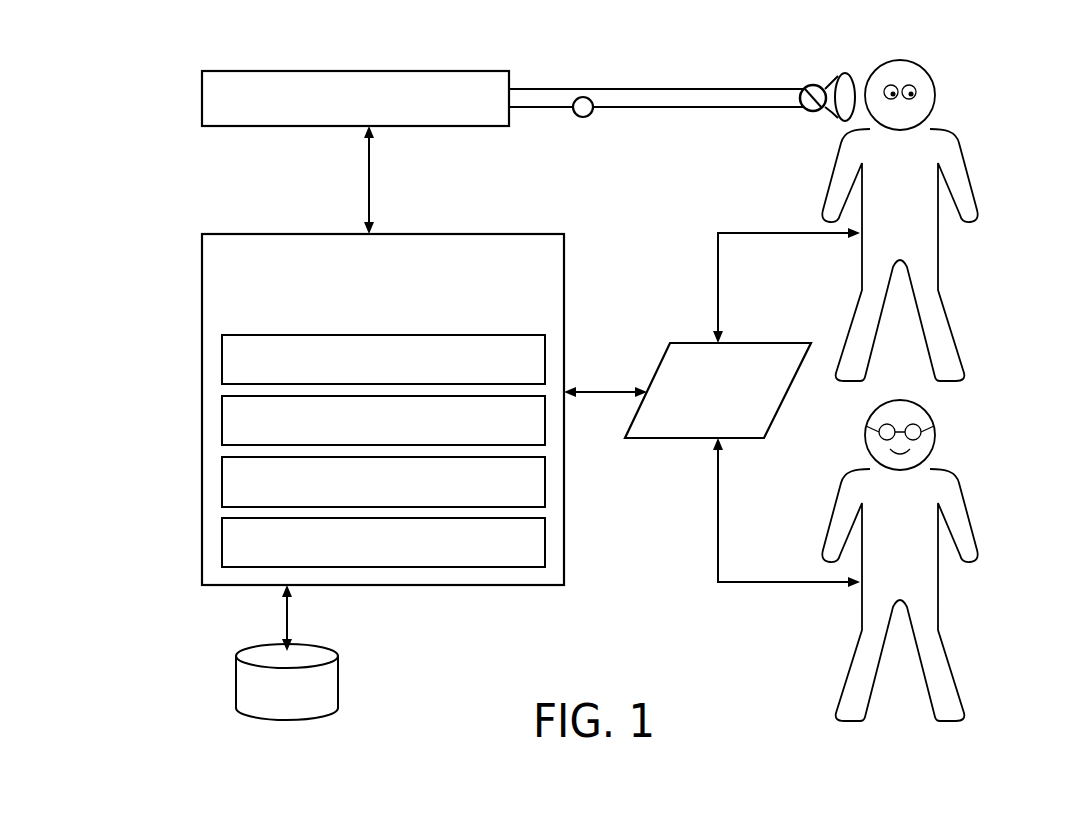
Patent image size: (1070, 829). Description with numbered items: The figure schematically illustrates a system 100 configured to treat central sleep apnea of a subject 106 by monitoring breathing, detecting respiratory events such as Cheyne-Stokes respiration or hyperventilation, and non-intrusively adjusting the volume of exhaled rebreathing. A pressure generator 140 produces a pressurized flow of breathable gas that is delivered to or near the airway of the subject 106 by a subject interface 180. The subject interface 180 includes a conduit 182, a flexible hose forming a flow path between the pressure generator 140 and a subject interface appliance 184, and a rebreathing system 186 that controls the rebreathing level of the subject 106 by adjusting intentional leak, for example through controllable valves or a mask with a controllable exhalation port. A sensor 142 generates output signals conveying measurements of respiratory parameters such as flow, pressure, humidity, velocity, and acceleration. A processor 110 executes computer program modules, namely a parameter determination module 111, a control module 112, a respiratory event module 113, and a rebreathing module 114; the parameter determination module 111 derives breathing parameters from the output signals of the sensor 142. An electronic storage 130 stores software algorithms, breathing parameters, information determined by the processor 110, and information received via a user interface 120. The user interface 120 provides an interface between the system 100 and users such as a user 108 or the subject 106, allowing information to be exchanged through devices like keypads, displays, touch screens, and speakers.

The system 100 is at (128, 634).
The subject 106 is at (948, 140).
The user 108 is at (948, 480).
The processor 110 is at (252, 271).
The parameter determination module 111 is at (403, 556).
The control module 112 is at (403, 495).
The respiratory event module 113 is at (403, 432).
The rebreathing module 114 is at (403, 371).
The user interface 120 is at (737, 403).
The electronic storage 130 is at (340, 668).
The pressure generator 140 is at (374, 110).
The sensor 142 is at (583, 119).
The subject interface 180 is at (520, 96).
The conduit 182 is at (597, 89).
The subject interface appliance 184 is at (825, 112).
The rebreathing system 186 is at (802, 87).